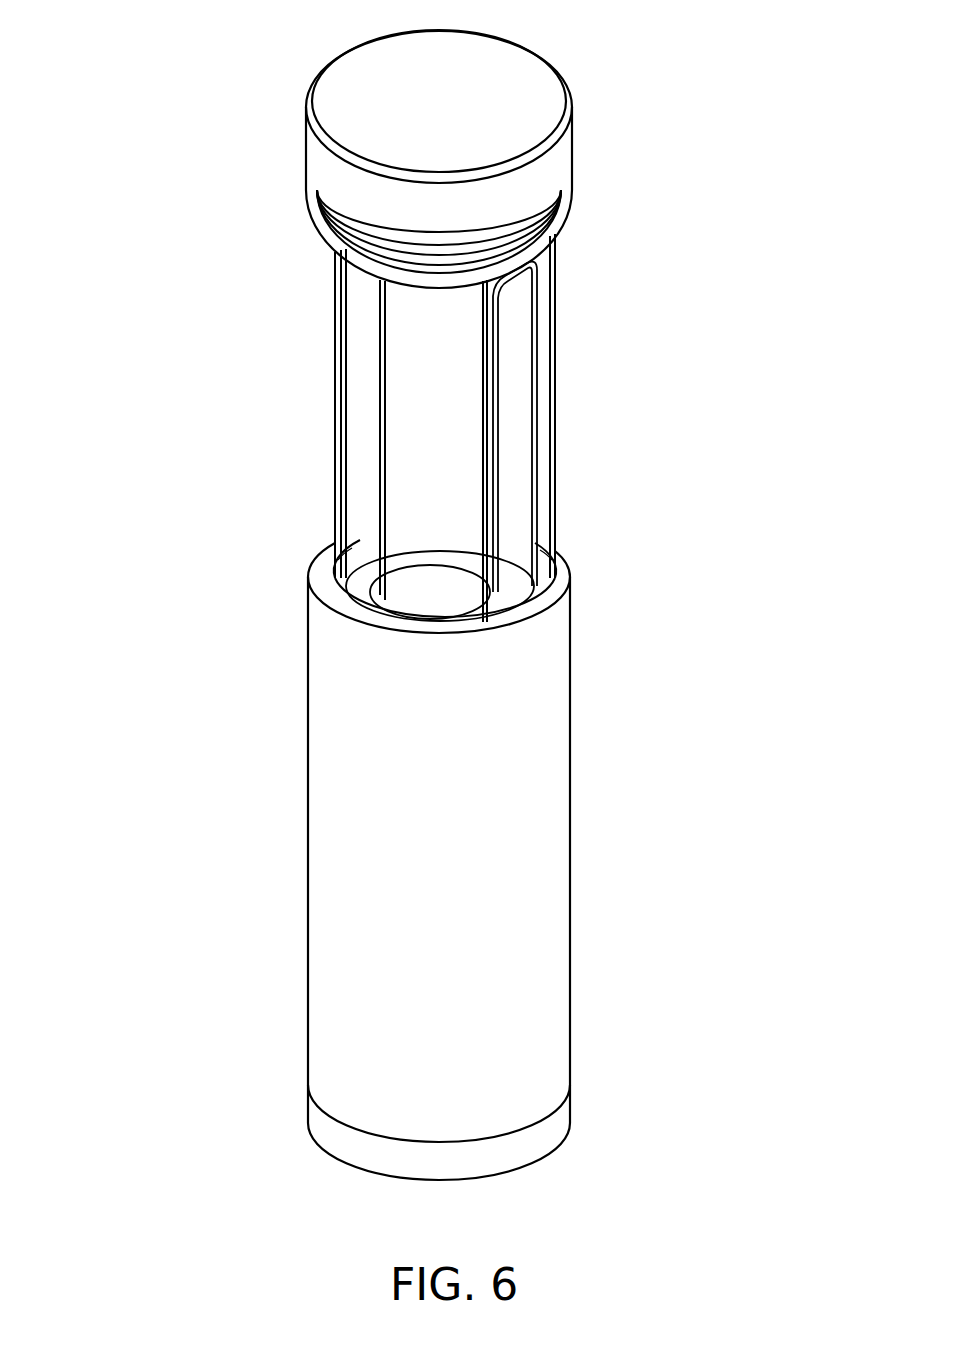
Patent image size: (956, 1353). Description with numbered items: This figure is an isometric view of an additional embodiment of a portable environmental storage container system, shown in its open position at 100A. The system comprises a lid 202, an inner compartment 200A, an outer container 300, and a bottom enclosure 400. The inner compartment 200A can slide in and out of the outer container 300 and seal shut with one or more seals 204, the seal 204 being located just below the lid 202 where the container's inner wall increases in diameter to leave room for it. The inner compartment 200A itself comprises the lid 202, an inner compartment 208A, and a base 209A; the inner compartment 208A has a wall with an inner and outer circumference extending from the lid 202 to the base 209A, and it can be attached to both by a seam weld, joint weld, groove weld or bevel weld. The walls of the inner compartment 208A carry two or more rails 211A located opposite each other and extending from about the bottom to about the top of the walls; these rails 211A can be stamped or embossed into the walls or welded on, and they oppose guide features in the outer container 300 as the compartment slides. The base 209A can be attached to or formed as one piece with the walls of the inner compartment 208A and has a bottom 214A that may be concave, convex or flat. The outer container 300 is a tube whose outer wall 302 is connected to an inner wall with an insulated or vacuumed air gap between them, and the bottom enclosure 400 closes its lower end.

The portable environmental storage container system 100A is at (276, 66).
The inner compartment 200A is at (572, 328).
The lid 202 is at (508, 105).
The seal 204 is at (333, 227).
The inner compartment 208A is at (422, 428).
The rail 211A is at (517, 461).
The base 209A is at (357, 587).
The bottom 214A is at (420, 618).
The outer container 300 is at (590, 812).
The outer wall 302 is at (522, 715).
The bottom enclosure 400 is at (590, 1090).